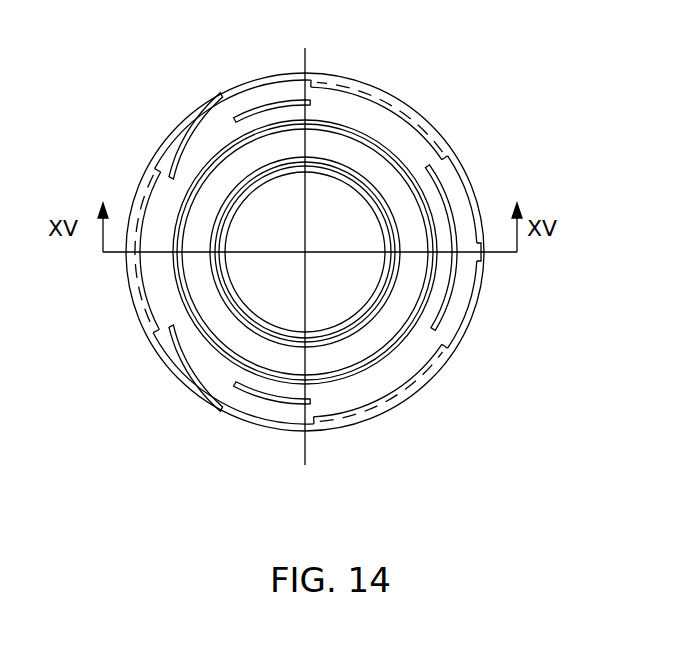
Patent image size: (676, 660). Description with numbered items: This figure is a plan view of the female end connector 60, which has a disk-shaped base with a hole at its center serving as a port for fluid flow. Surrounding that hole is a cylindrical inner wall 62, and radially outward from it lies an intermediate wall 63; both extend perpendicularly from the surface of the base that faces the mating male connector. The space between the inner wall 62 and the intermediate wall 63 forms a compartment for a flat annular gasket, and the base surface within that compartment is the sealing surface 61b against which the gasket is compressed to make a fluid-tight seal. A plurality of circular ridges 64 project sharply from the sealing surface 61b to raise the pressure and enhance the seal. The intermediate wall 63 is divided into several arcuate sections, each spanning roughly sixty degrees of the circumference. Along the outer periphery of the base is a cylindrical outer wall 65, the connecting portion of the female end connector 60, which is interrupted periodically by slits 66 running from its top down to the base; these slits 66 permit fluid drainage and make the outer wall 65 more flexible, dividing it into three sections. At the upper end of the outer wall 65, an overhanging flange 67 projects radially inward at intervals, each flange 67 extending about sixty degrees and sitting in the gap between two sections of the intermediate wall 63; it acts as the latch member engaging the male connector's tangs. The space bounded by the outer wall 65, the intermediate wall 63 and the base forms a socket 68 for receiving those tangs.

The female end connector 60 is at (455, 120).
The sealing surface 61b is at (385, 170).
The cylindrical inner wall 62 is at (225, 290).
The intermediate wall 63 is at (205, 130).
The circular ridges 64 is at (340, 160).
The cylindrical outer wall 65 is at (163, 136).
The slits 66 is at (222, 93).
The overhanging flange 67 is at (135, 195).
The socket 68 is at (190, 372).